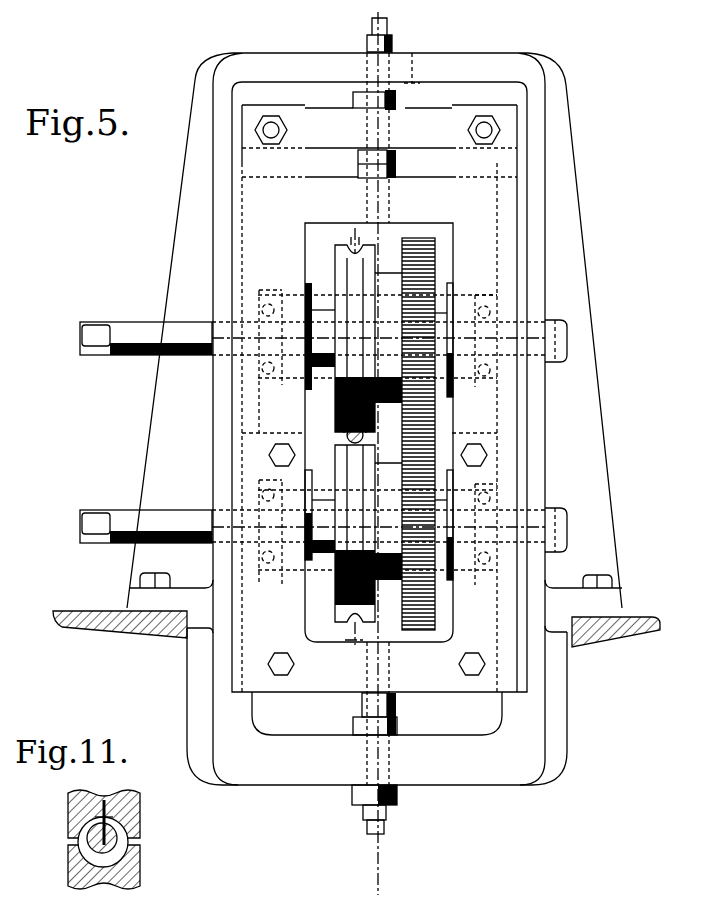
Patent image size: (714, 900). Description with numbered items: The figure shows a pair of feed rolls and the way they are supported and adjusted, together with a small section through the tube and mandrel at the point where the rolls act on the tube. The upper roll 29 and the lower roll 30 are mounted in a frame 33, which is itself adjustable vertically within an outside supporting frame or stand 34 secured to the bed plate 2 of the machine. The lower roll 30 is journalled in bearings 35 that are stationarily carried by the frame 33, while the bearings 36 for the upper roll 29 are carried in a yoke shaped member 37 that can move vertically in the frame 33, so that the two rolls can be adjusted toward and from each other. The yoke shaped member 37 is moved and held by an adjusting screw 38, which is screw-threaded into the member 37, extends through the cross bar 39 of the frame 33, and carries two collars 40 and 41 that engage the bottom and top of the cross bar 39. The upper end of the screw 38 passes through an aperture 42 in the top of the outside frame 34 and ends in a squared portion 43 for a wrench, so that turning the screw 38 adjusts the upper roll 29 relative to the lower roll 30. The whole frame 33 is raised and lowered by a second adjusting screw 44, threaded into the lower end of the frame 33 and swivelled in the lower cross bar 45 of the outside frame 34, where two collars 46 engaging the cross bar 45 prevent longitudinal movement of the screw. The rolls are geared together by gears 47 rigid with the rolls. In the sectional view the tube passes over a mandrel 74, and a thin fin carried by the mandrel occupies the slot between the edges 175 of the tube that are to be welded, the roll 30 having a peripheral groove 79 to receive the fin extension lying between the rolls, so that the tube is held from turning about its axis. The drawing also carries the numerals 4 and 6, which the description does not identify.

In FIG. 5, the bed portion 2 is at (113, 632).
In FIG. 5, the bearing race 4 is at (364, 438).
In FIG. 11, the bearing race 4 is at (140, 868).
In FIG. 5, the shaft 6 is at (383, 23).
In FIG. 5, the upper roll 29 is at (342, 277).
In FIG. 11, the upper roll 29 is at (67, 797).
In FIG. 5, the lower roll 30 is at (343, 598).
In FIG. 11, the lower roll 30 is at (68, 866).
In FIG. 5, the frame 33 is at (374, 419).
In FIG. 5, the supporting frame 34 is at (160, 427).
In FIG. 5, the bearings 35 is at (282, 568).
In FIG. 5, the bearings 36 is at (272, 296).
In FIG. 5, the yoke shaped member 37 is at (432, 185).
In FIG. 5, the adjusting screw 38 is at (395, 170).
In FIG. 5, the cross bar 39 is at (336, 118).
In FIG. 5, the collar 40 is at (360, 157).
In FIG. 5, the collar 41 is at (402, 97).
In FIG. 5, the aperture 42 is at (412, 64).
In FIG. 5, the squared portion 43 is at (366, 30).
In FIG. 5, the adjusting screw 44 is at (392, 712).
In FIG. 5, the lower cross bar 45 is at (317, 775).
In FIG. 5, the collars 46 is at (355, 720).
In FIG. 5, the gears 47 is at (432, 410).
In FIG. 5, the mandrel 74 is at (350, 440).
In FIG. 11, the mandrel 74 is at (113, 838).
In FIG. 5, the peripheral groove 79 is at (352, 252).
In FIG. 11, the edges 175 is at (97, 817).